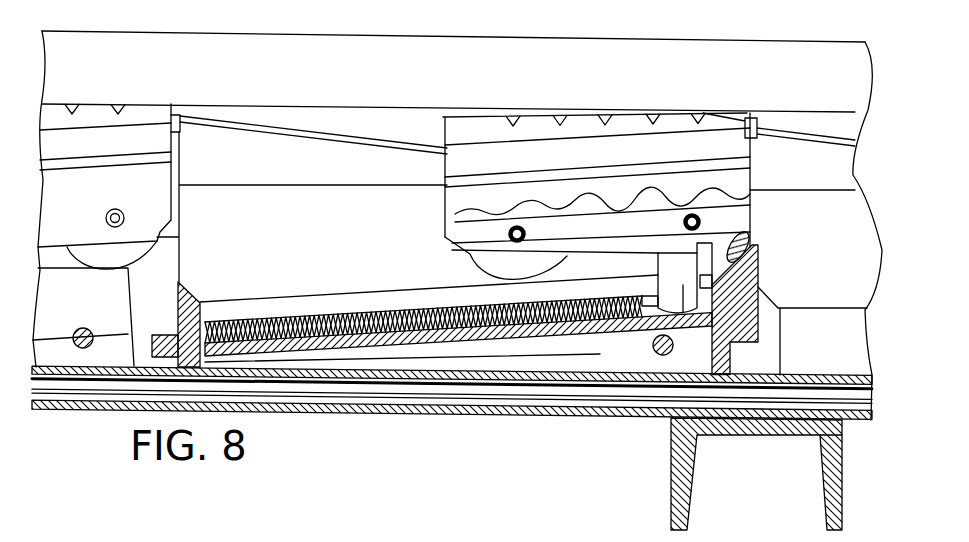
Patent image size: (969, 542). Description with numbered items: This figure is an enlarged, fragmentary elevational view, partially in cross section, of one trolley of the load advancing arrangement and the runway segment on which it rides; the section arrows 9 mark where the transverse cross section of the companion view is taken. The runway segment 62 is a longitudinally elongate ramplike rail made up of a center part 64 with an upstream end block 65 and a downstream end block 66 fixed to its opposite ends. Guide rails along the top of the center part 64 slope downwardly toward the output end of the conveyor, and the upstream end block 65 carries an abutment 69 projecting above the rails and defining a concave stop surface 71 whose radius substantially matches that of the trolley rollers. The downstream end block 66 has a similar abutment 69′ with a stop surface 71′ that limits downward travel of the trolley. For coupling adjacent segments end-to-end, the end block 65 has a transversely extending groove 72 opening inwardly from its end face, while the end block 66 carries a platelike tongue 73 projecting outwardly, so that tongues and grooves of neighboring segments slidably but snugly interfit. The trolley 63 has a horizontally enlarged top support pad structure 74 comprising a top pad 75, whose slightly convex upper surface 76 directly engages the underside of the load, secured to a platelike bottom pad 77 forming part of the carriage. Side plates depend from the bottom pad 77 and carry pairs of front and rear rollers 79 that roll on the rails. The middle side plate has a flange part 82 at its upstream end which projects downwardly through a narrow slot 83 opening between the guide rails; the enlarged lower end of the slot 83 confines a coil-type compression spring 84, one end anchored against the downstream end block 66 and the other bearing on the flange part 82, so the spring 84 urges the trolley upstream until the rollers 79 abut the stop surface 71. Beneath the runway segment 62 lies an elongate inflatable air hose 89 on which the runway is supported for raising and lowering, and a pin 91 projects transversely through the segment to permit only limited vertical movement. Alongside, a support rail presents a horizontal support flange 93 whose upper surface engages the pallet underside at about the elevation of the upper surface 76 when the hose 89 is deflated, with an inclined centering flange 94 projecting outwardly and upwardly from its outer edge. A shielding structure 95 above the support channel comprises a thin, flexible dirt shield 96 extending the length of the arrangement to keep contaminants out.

The section line 9- 9 is at (427, 528).
The inclined centering flange 94 is at (217, 48).
The horizontal support flange 93 is at (231, 103).
The shielding structure 95 is at (277, 125).
The dirt shield member 96 is at (337, 133).
The top support pad structure 74 is at (470, 114).
The upper surface 76 is at (583, 110).
The top pad 75 is at (670, 122).
The bottom pad 77 is at (730, 143).
The trolley 63 is at (440, 206).
The rollers 79 is at (482, 270).
The narrow slot 83 is at (323, 304).
The abutment 69′ is at (182, 280).
The stop surface 71′ is at (202, 298).
The stop surface 71 is at (757, 221).
The abutment 69 is at (753, 258).
The upstream end block 65 is at (742, 310).
The flange part 82 is at (670, 348).
The compression spring 84 is at (483, 337).
The runway segment 62 is at (375, 357).
The center part 64 is at (580, 360).
The inflatable air hose 89 is at (297, 392).
The downstream end block 66 is at (150, 393).
The pin 91 is at (655, 348).
The groove 72 is at (748, 353).
The tongue 73 is at (752, 388).